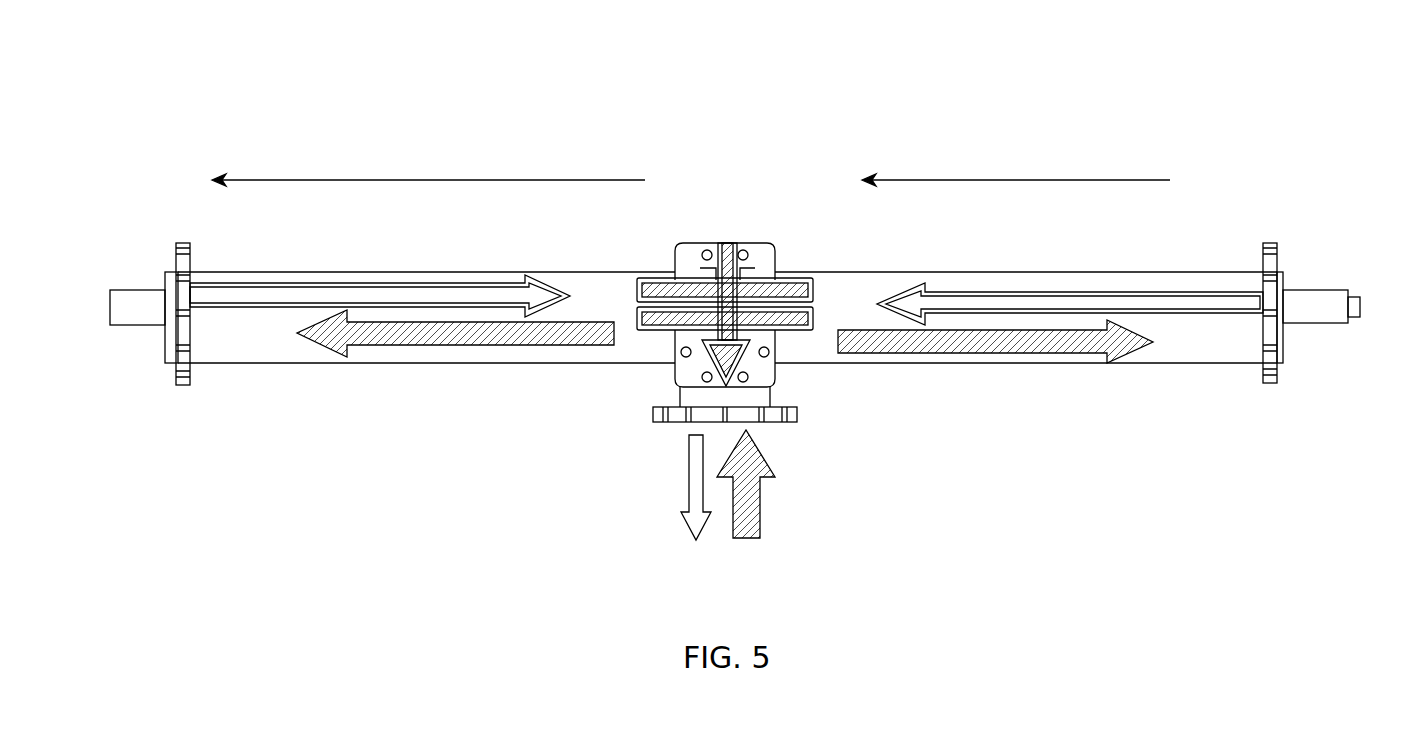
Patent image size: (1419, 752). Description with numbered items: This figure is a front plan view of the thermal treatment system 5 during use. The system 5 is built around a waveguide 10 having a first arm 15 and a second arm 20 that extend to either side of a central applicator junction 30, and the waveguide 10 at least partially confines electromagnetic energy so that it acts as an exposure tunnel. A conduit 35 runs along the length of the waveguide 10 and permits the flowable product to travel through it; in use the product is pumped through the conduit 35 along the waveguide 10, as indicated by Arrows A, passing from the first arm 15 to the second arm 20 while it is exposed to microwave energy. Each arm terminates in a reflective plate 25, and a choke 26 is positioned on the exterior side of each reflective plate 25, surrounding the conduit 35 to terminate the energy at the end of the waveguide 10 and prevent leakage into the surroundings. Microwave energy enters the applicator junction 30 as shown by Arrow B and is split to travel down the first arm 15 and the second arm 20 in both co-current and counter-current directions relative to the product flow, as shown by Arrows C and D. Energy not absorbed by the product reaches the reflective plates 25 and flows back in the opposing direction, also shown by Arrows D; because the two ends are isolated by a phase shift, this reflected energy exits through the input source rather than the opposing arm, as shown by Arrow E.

The thermal treatment system 5 is at (792, 76).
The waveguide 10 is at (757, 243).
The first arm 15 is at (1148, 364).
The second arm 20 is at (265, 365).
The reflective plate 25 is at (183, 386).
The choke 26 is at (1275, 385).
The applicator junction 30 is at (750, 395).
The conduit 35 is at (1330, 290).
The Arrows A is at (691, 158).
The Arrow B is at (746, 508).
The Arrows C is at (545, 345).
The Arrows D is at (308, 283).
The Arrow E is at (696, 511).